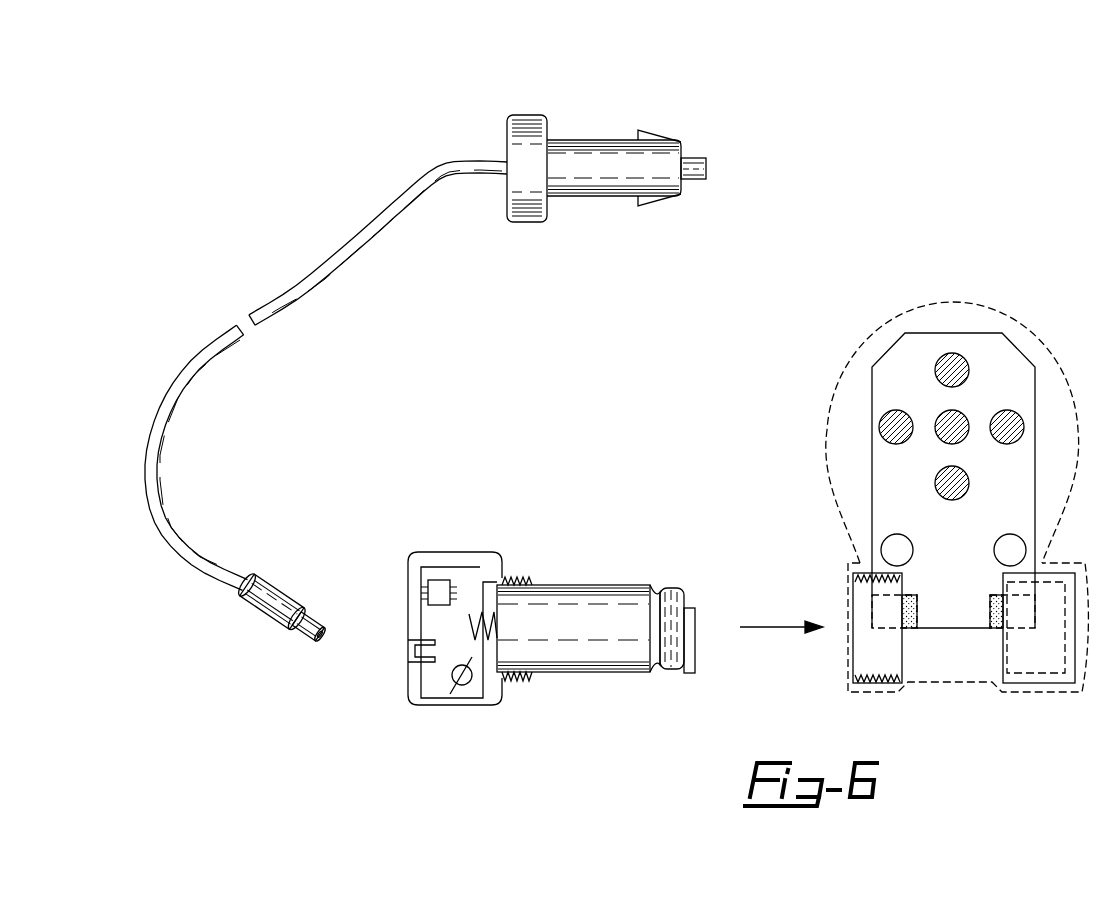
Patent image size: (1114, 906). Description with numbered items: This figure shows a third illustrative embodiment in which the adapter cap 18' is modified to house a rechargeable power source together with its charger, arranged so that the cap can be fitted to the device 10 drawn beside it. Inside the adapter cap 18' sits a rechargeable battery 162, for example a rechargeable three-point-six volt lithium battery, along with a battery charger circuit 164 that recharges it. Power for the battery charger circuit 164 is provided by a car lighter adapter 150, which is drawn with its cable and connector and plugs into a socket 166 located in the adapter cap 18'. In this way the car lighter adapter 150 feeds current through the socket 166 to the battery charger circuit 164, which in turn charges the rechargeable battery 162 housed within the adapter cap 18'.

The car lighter adapter 150 is at (607, 152).
The medical device 10 is at (1054, 311).
The adapter cap 18' is at (443, 568).
The battery charger circuit 164 is at (463, 567).
The rechargeable battery 162 is at (583, 625).
The socket 166 is at (410, 653).